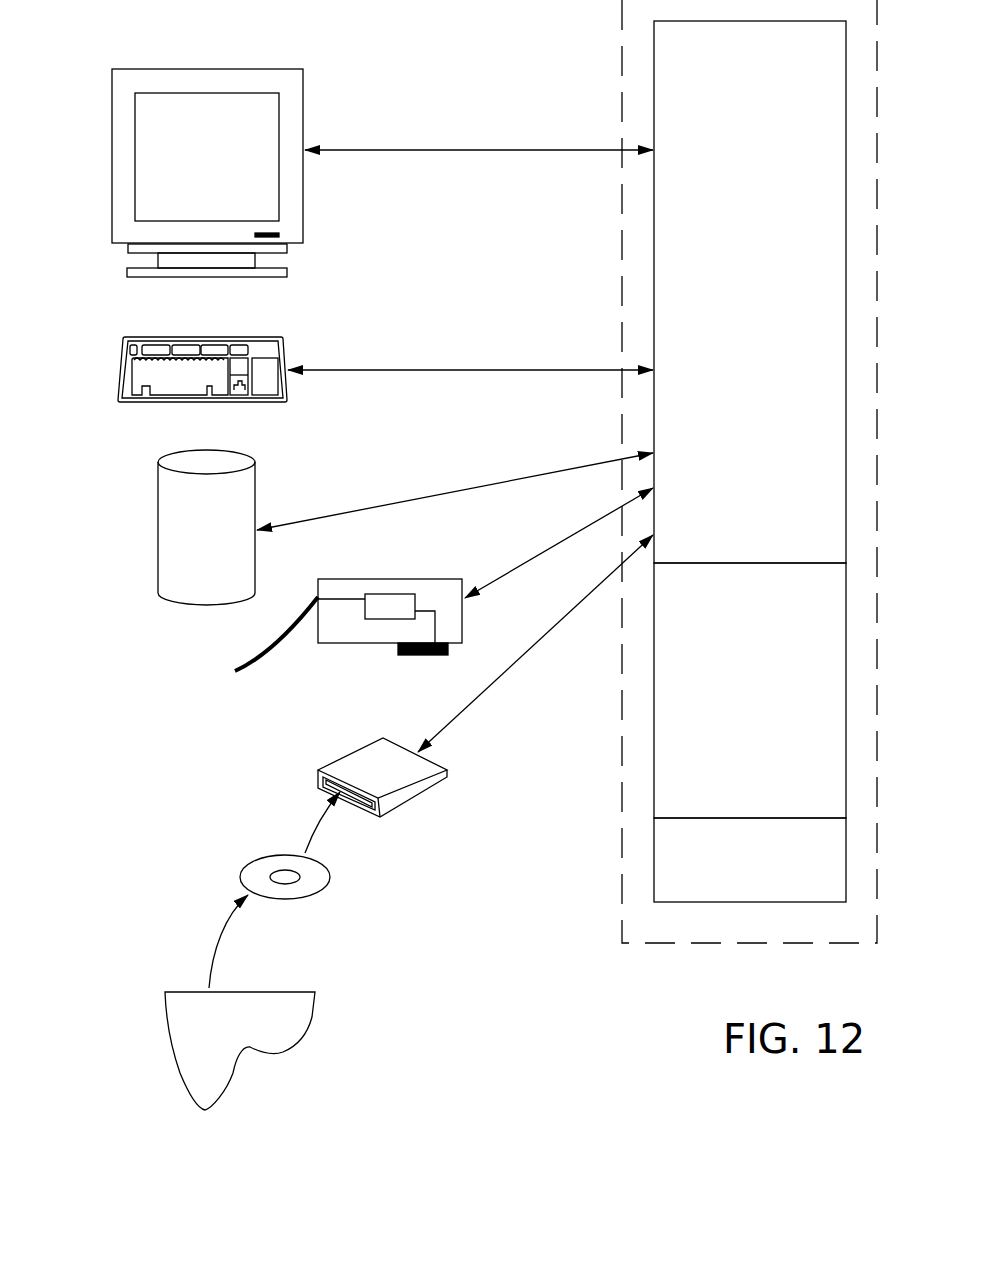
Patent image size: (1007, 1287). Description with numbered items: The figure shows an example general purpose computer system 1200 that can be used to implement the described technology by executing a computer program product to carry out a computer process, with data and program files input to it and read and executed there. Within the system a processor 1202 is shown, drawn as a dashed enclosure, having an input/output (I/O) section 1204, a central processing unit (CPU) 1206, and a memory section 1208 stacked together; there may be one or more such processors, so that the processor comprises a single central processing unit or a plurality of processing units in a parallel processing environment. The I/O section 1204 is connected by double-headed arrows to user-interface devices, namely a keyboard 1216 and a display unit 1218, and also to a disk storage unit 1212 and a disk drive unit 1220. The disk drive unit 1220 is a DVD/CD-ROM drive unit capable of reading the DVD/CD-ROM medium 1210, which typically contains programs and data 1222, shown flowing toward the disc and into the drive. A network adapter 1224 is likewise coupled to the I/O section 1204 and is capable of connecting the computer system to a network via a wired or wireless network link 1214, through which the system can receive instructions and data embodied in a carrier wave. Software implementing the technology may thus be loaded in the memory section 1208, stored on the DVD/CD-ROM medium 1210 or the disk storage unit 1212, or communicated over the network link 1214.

The general purpose computer system 1200 is at (585, 1040).
The processor 1202 is at (622, 52).
The input/output (I/O) section 1204 is at (727, 314).
The central processing unit (CPU) 1206 is at (727, 713).
The memory section 1208 is at (727, 883).
The DVD/CD-ROM medium 1210 is at (255, 858).
The disk storage unit 1212 is at (158, 483).
The network link 1214 is at (258, 660).
The keyboard 1216 is at (163, 335).
The display unit 1218 is at (175, 69).
The disk drive unit 1220 is at (367, 770).
The programs and data 1222 is at (312, 1013).
The network adapter 1224 is at (365, 645).